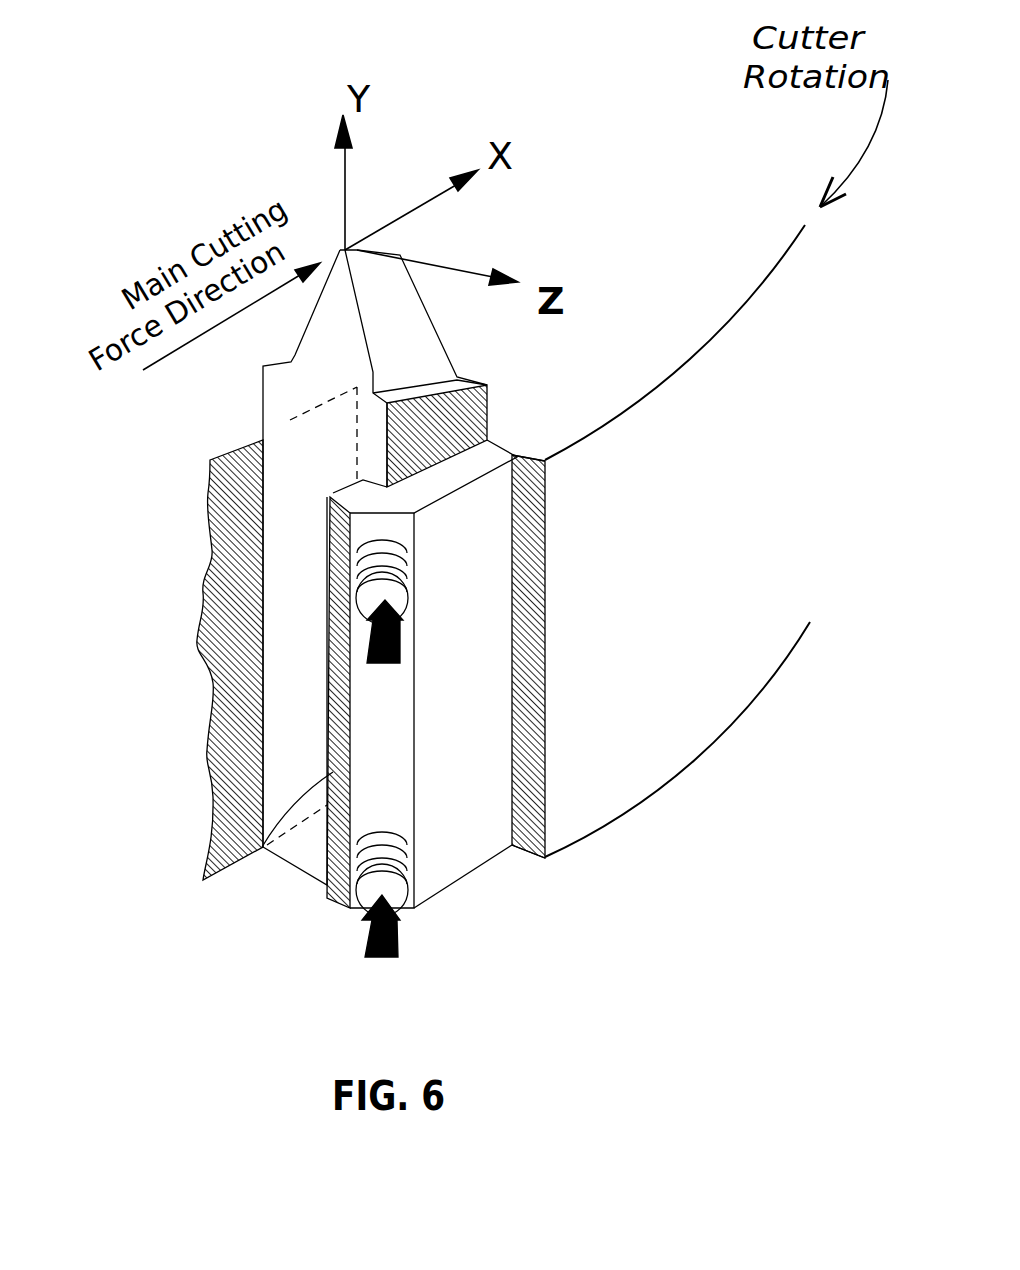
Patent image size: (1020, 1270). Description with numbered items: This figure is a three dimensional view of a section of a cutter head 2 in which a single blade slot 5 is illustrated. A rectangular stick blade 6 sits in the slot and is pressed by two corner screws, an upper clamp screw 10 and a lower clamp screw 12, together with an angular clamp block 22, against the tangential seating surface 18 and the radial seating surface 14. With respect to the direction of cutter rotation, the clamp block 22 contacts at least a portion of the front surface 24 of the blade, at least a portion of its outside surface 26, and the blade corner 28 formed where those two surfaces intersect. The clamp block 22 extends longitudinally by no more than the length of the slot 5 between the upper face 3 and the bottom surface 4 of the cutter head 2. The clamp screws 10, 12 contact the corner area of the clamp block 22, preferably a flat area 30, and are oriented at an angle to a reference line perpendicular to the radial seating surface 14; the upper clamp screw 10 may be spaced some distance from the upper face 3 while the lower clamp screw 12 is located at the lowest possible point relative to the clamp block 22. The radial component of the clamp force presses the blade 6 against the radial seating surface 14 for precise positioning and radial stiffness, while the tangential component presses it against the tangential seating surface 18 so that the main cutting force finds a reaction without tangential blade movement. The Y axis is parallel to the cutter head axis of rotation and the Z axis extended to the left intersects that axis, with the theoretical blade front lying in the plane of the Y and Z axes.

The cutter head 2 is at (733, 403).
The upper face 3 is at (707, 251).
The bottom surface 4 is at (690, 771).
The blade slot 5 is at (531, 434).
The rectangular blade 6 is at (282, 403).
The upper clamp screw 10 is at (400, 550).
The lower clamp screw 12 is at (400, 832).
The radial seating surface 14 is at (207, 553).
The tangential seating surface 18 is at (545, 595).
The clamp block 22 is at (457, 730).
The front surface 24 is at (290, 672).
The outside surface 26 is at (490, 398).
The blade corner 28 is at (387, 440).
The flat area 30 is at (377, 757).